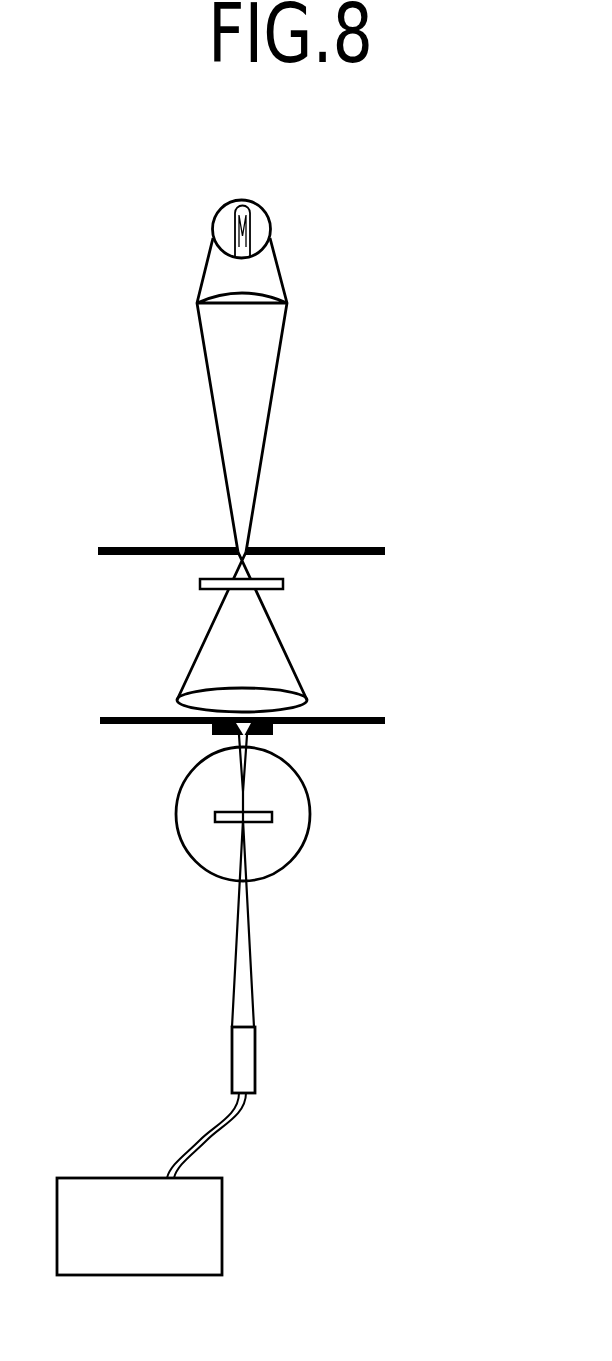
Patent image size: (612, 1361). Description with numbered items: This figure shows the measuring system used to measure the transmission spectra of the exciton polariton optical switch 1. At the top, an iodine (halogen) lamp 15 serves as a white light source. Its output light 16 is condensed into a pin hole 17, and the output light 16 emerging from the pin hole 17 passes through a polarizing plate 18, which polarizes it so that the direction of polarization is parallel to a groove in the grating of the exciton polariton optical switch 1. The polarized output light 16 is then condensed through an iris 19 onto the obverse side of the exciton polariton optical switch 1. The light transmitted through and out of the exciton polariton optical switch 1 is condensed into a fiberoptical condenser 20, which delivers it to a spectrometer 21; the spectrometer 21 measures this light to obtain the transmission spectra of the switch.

The exciton polariton optical switch 1 is at (215, 817).
The iodine (halogen) lamp 15 is at (268, 215).
The output light 16 is at (262, 415).
The pin hole 17 is at (327, 548).
The polarizing plate 18 is at (200, 584).
The iris 19 is at (380, 720).
The fiberoptical condenser 20 is at (227, 1130).
The spectrometer 21 is at (222, 1227).